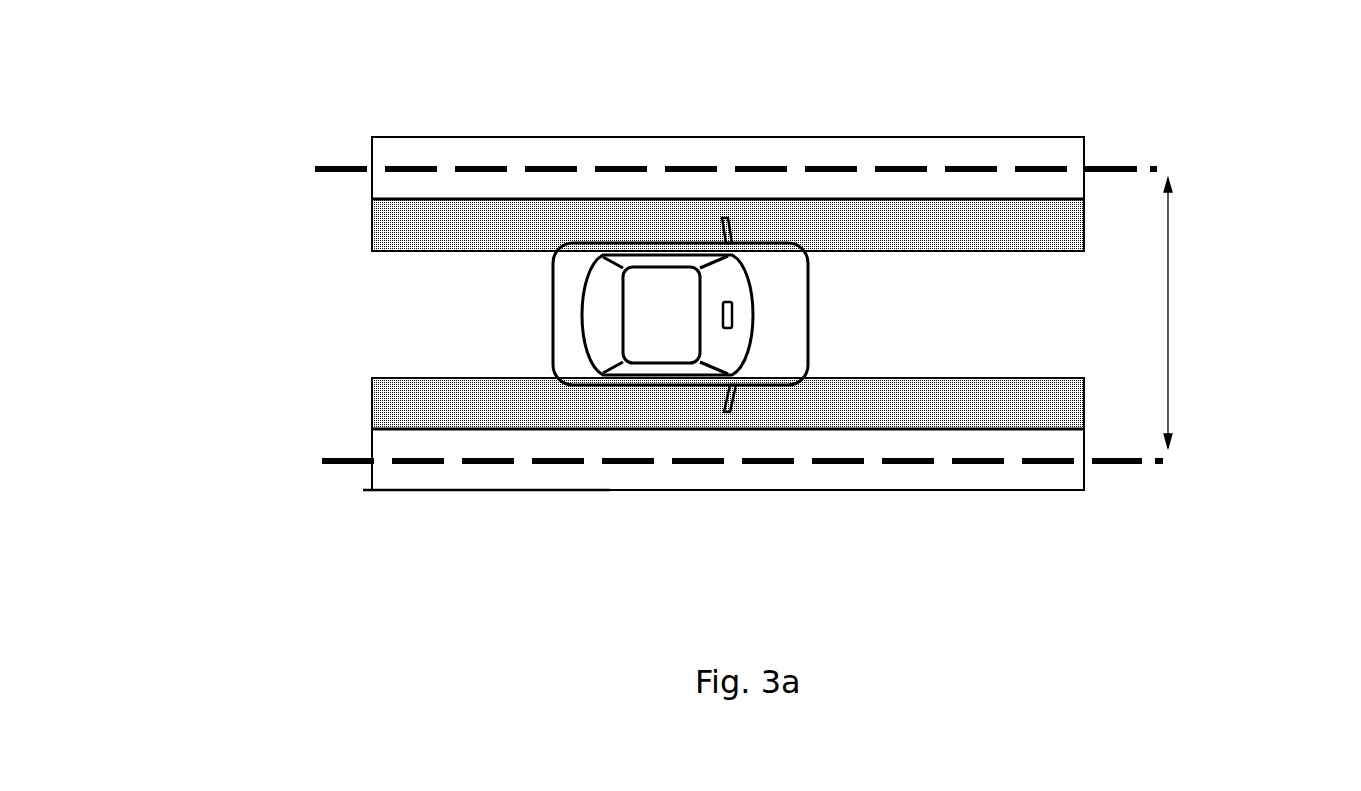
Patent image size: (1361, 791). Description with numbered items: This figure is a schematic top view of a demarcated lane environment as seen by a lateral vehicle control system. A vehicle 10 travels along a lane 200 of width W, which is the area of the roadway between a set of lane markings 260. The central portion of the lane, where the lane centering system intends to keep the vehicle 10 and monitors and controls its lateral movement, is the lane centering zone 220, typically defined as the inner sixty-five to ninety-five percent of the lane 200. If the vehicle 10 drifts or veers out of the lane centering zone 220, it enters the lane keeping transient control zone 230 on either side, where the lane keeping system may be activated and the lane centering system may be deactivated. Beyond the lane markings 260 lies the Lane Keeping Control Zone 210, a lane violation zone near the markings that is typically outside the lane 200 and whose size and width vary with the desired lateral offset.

The vehicle 10 is at (747, 273).
The lane 200 is at (1222, 307).
The Lane Keeping Control Zone (LKCZ) 210 is at (748, 137).
The lane centering zone (LCZ) 220 is at (440, 315).
The lane keeping transient control zone (LKTZ) 230 is at (424, 208).
The lane markings 260 is at (330, 160).